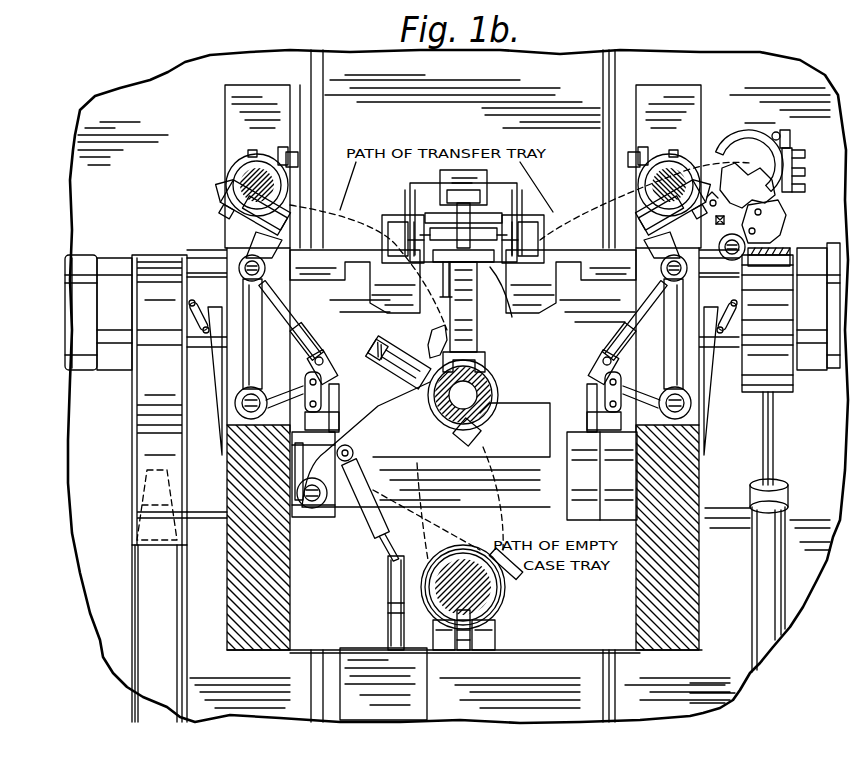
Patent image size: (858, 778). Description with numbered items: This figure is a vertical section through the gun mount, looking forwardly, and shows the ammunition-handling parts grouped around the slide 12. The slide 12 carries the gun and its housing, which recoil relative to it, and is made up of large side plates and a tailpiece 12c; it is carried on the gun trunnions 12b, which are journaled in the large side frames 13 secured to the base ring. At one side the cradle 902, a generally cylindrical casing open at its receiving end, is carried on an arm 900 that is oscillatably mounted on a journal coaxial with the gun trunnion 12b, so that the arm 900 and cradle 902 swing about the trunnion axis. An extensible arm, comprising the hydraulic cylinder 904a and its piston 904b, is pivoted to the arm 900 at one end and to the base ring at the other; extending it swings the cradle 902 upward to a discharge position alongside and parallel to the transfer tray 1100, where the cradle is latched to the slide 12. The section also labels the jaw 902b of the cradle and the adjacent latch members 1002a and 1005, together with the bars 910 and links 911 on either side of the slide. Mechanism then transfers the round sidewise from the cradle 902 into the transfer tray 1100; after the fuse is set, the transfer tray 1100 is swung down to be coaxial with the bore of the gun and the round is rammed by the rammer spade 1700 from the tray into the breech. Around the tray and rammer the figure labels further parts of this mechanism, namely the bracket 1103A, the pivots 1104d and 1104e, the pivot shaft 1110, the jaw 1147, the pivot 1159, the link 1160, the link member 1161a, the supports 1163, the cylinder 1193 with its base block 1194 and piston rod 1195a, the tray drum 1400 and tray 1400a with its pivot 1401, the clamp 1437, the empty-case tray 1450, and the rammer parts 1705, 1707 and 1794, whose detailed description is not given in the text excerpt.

The slide 12 is at (306, 268).
The gun trunnion 12b is at (115, 258).
The tailpiece 12c is at (390, 220).
The side frame 13 is at (80, 256).
The arm 900 is at (142, 382).
The cradle 902 is at (791, 146).
The clamp jaw 902b is at (742, 140).
The hydraulic cylinder 904a is at (765, 560).
The piston rod 904b is at (776, 440).
The actuating bar 910 is at (204, 345).
The link 911 is at (198, 308).
The latch bracket 1002a is at (770, 223).
The latch 1005 is at (748, 202).
The transfer tray 1100 is at (290, 183).
The gripper bracket 1103A is at (302, 152).
The pivot pin 1104d is at (322, 358).
The pivot pin 1104e is at (607, 350).
The pivot shaft 1110 is at (685, 405).
The gripper jaw 1147 is at (228, 225).
The pivot 1159 is at (248, 262).
The connecting link 1160 is at (298, 338).
The link member 1161a is at (334, 406).
The tray support 1163 is at (372, 540).
The hydraulic cylinder 1193 is at (372, 525).
The base block 1194 is at (418, 668).
The piston rod 1195a is at (392, 635).
The transfer tray drum 1400 is at (497, 385).
The transfer tray 1400a is at (388, 460).
The tray pivot 1401 is at (315, 510).
The tray clamp 1437 is at (383, 352).
The empty case tray 1450 is at (500, 595).
The rammer spade 1700 is at (484, 370).
The vertical shaft 1705 is at (482, 307).
The guide rod 1707 is at (515, 265).
The transfer head 1794 is at (415, 225).